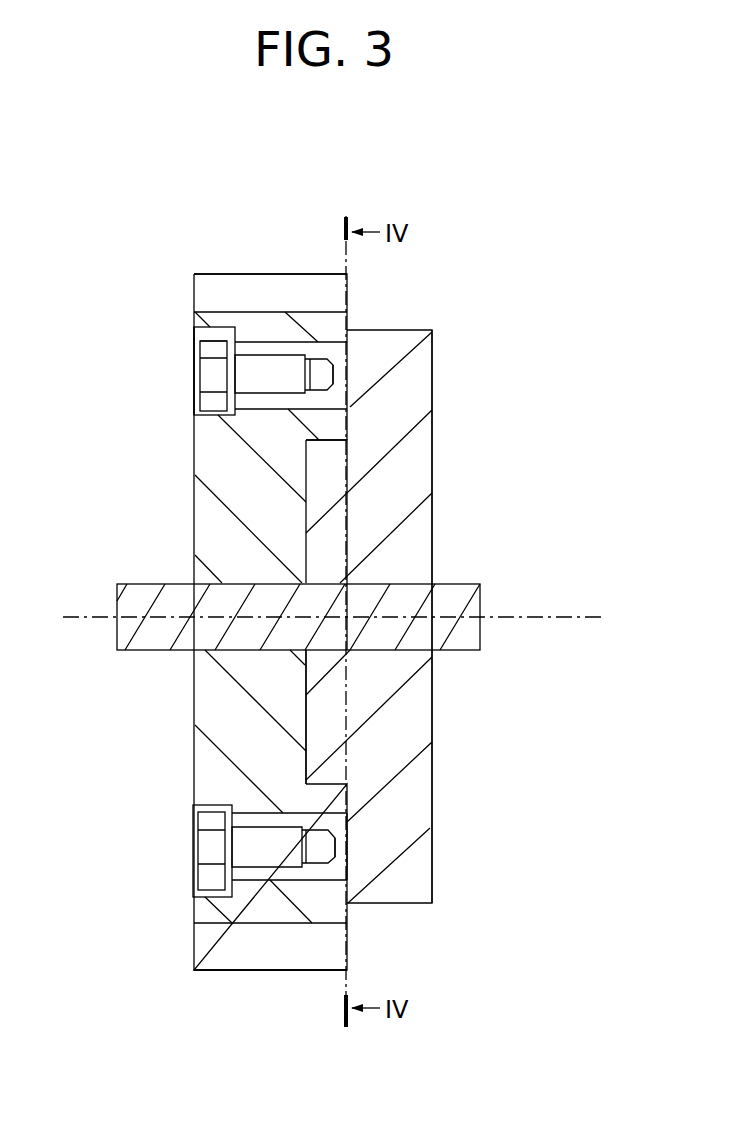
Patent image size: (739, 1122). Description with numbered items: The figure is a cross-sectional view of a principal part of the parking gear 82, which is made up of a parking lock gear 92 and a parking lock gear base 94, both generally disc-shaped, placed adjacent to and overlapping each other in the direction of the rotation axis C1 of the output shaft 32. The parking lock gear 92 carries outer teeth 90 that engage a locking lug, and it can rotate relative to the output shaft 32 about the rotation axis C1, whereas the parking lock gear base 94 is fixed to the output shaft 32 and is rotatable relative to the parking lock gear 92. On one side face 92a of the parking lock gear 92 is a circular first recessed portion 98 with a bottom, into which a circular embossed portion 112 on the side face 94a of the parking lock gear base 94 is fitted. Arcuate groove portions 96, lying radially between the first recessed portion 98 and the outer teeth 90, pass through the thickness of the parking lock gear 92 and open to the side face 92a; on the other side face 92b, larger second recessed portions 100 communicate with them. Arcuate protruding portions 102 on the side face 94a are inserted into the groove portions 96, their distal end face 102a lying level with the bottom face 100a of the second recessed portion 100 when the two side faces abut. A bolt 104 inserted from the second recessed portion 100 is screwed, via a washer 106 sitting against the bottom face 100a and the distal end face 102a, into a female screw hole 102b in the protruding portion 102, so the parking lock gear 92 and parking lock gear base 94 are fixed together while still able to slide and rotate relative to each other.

The parking gear 82 is at (540, 500).
The outer teeth 90 is at (222, 283).
The parking lock gear 92 is at (182, 774).
The side face 92a is at (347, 920).
The other side face 92b is at (194, 520).
The parking lock gear base 94 is at (447, 825).
The side face 94a is at (333, 835).
The groove portion 96 is at (335, 355).
The first recessed portion 98 is at (310, 716).
The second recessed portion 100 is at (200, 398).
The bottom face 100a is at (203, 345).
The protruding portion 102 is at (287, 347).
The distal end face 102a is at (222, 410).
The female screw hole 102b is at (242, 880).
The bolt 104 is at (290, 866).
The washer 106 is at (193, 830).
The embossed portion 112 is at (333, 462).
The output shaft 32 is at (150, 638).
The rotation axis C1 is at (553, 620).